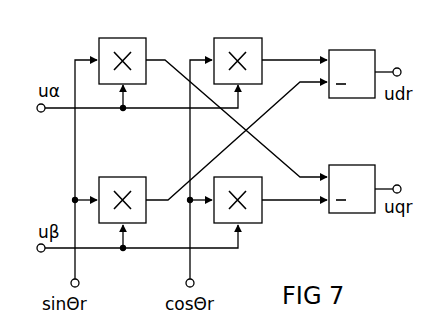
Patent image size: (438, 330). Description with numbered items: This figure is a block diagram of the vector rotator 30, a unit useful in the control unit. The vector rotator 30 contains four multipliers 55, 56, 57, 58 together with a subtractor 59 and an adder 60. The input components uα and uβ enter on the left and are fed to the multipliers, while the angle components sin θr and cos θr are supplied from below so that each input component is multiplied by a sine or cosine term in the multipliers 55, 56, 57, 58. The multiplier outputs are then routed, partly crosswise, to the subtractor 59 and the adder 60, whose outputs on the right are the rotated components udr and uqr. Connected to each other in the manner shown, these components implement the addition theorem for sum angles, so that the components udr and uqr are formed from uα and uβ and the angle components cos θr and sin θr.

The vector rotator 30 is at (261, 222).
The multiplier 55 is at (137, 176).
The multiplier 56 is at (128, 37).
The multiplier 57 is at (236, 37).
The multiplier 58 is at (236, 176).
The subtractor 59 is at (341, 49).
The adder 60 is at (362, 165).